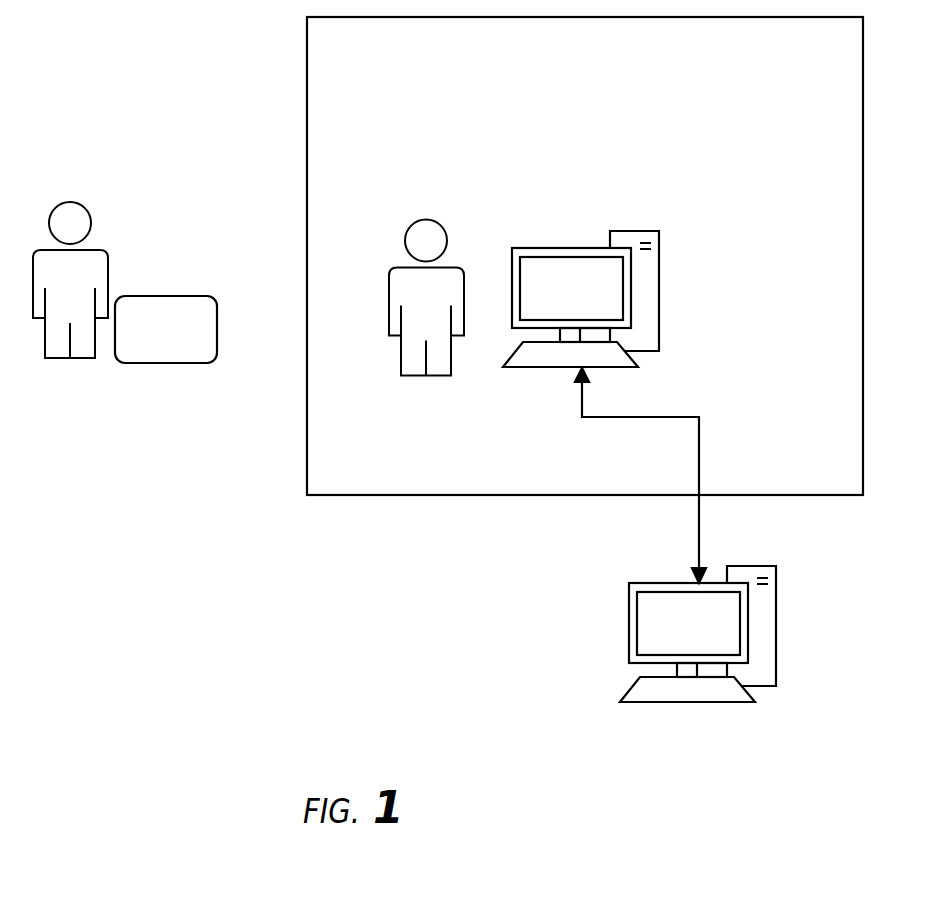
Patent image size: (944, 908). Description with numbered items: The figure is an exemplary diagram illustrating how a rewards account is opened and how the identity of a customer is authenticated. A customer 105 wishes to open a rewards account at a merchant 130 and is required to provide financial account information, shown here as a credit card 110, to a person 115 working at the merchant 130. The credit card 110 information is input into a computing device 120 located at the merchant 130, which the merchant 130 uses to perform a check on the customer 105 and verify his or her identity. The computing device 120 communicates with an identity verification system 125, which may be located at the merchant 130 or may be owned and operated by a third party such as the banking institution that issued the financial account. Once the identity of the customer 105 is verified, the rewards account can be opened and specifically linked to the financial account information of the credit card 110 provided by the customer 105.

The customer 105 is at (70, 300).
The credit card 110 is at (166, 347).
The person working at merchant 115 is at (426, 315).
The computing device 120 is at (603, 299).
The identity verification system 125 is at (698, 654).
The merchant 130 is at (585, 277).